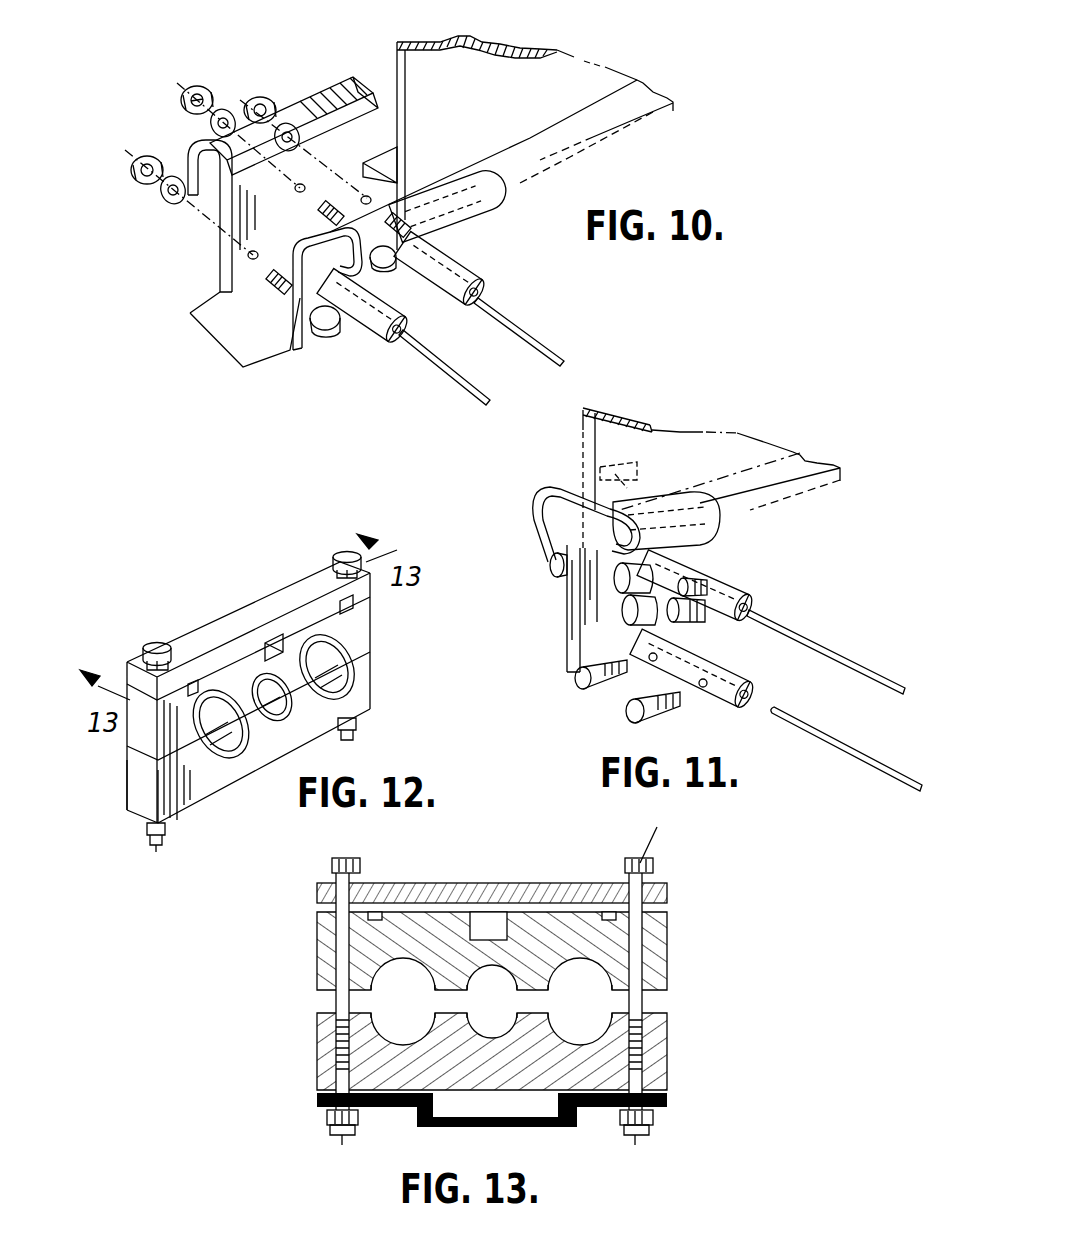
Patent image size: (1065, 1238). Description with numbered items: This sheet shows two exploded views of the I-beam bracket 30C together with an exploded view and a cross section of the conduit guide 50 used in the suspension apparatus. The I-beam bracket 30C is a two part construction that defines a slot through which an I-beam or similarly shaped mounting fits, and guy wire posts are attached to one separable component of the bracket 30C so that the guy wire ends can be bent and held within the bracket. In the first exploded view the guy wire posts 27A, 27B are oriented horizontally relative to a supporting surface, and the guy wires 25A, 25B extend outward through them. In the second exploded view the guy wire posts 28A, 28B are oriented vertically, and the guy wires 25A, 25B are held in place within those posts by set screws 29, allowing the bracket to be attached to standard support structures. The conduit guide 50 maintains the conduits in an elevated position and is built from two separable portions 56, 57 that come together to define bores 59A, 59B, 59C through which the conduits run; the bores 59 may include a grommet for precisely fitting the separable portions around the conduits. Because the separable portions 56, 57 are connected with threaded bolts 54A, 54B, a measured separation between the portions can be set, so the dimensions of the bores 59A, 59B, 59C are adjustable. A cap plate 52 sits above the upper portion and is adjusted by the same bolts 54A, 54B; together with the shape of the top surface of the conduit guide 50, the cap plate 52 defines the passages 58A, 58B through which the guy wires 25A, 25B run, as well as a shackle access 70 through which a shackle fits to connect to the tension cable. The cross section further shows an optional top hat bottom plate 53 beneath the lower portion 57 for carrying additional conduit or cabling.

In FIG. 10, the guy wire 25A is at (447, 377).
In FIG. 11, the guy wire 25A is at (813, 647).
In FIG. 10, the guy wire 25B is at (538, 345).
In FIG. 11, the guy wire 25B is at (837, 718).
In FIG. 10, the guy wire post 27A is at (382, 327).
In FIG. 10, the guy wire post 27B is at (478, 275).
In FIG. 11, the guy wire post 28A is at (720, 590).
In FIG. 11, the guy wire post 28B is at (693, 660).
In FIG. 11, the set screw 29 is at (583, 690).
In FIG. 10, the I-beam bracket 30C is at (214, 336).
In FIG. 12, the conduit guide 50 is at (67, 793).
In FIG. 12, the cap plate 52 is at (257, 610).
In FIG. 13, the cap plate 52 is at (432, 882).
In FIG. 13, the top hat bottom plate 53 is at (557, 1127).
In FIG. 12, the threaded bolt 54A is at (147, 643).
In FIG. 13, the threaded bolt 54A is at (342, 863).
In FIG. 12, the threaded bolt 54B is at (348, 553).
In FIG. 13, the threaded bolt 54B is at (636, 1001).
In FIG. 12, the separable portion 56 is at (253, 689).
In FIG. 13, the separable portion 56 is at (667, 930).
In FIG. 12, the separable portion 57 is at (276, 755).
In FIG. 13, the separable portion 57 is at (663, 1060).
In FIG. 12, the passage 58A is at (193, 683).
In FIG. 13, the passage 58A is at (375, 913).
In FIG. 12, the passage 58B is at (343, 600).
In FIG. 13, the passage 58B is at (610, 913).
In FIG. 12, the bore 59 is at (222, 730).
In FIG. 13, the bore 59A is at (403, 1001).
In FIG. 13, the bore 59B is at (492, 1001).
In FIG. 13, the bore 59C is at (580, 1001).
In FIG. 12, the shackle access 70 is at (285, 640).
In FIG. 13, the shackle access 70 is at (492, 920).